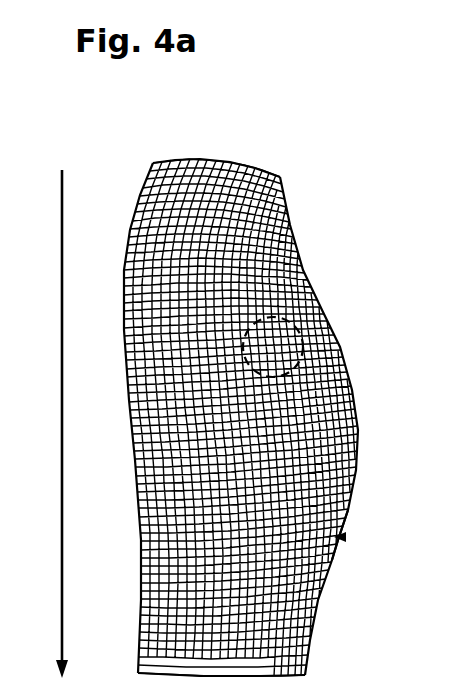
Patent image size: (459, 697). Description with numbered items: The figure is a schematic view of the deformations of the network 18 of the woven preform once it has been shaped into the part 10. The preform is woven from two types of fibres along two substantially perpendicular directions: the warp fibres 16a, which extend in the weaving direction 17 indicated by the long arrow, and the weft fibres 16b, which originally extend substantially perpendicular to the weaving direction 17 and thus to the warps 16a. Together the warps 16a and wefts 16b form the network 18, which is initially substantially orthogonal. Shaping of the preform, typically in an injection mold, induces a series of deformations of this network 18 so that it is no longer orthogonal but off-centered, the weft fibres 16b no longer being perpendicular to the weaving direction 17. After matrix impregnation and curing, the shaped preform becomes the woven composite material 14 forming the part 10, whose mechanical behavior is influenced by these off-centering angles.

The part 10 is at (270, 142).
The woven composite material 14 is at (344, 538).
The warp fibres 16a is at (175, 163).
The weft fibres 16b is at (152, 194).
The weaving direction 17 is at (63, 444).
The network 18 is at (308, 293).